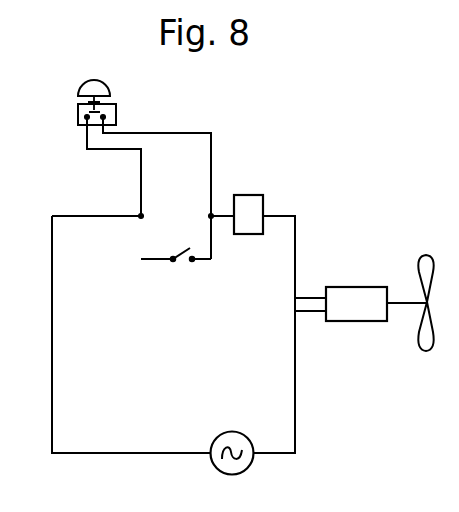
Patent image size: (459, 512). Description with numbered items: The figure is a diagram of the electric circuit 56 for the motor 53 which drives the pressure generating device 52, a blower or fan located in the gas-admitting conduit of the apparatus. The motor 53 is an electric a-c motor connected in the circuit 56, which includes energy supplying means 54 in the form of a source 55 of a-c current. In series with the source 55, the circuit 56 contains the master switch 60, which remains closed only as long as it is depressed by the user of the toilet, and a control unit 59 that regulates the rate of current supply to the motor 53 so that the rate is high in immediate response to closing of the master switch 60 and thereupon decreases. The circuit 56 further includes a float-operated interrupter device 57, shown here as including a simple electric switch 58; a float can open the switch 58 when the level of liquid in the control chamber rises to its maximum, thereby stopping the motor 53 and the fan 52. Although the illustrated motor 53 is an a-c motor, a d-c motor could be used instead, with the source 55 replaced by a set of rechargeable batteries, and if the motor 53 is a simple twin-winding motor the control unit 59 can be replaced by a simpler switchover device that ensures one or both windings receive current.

The pressure generating device 52 is at (423, 345).
The motor 53 is at (340, 295).
The energy supplying means 54 is at (218, 468).
The source of a-c current 55 is at (248, 467).
The circuit 56 is at (295, 407).
The float-operated interrupter device 57 is at (173, 262).
The electric switch 58 is at (192, 263).
The control unit 59 is at (251, 202).
The master switch 60 is at (112, 113).